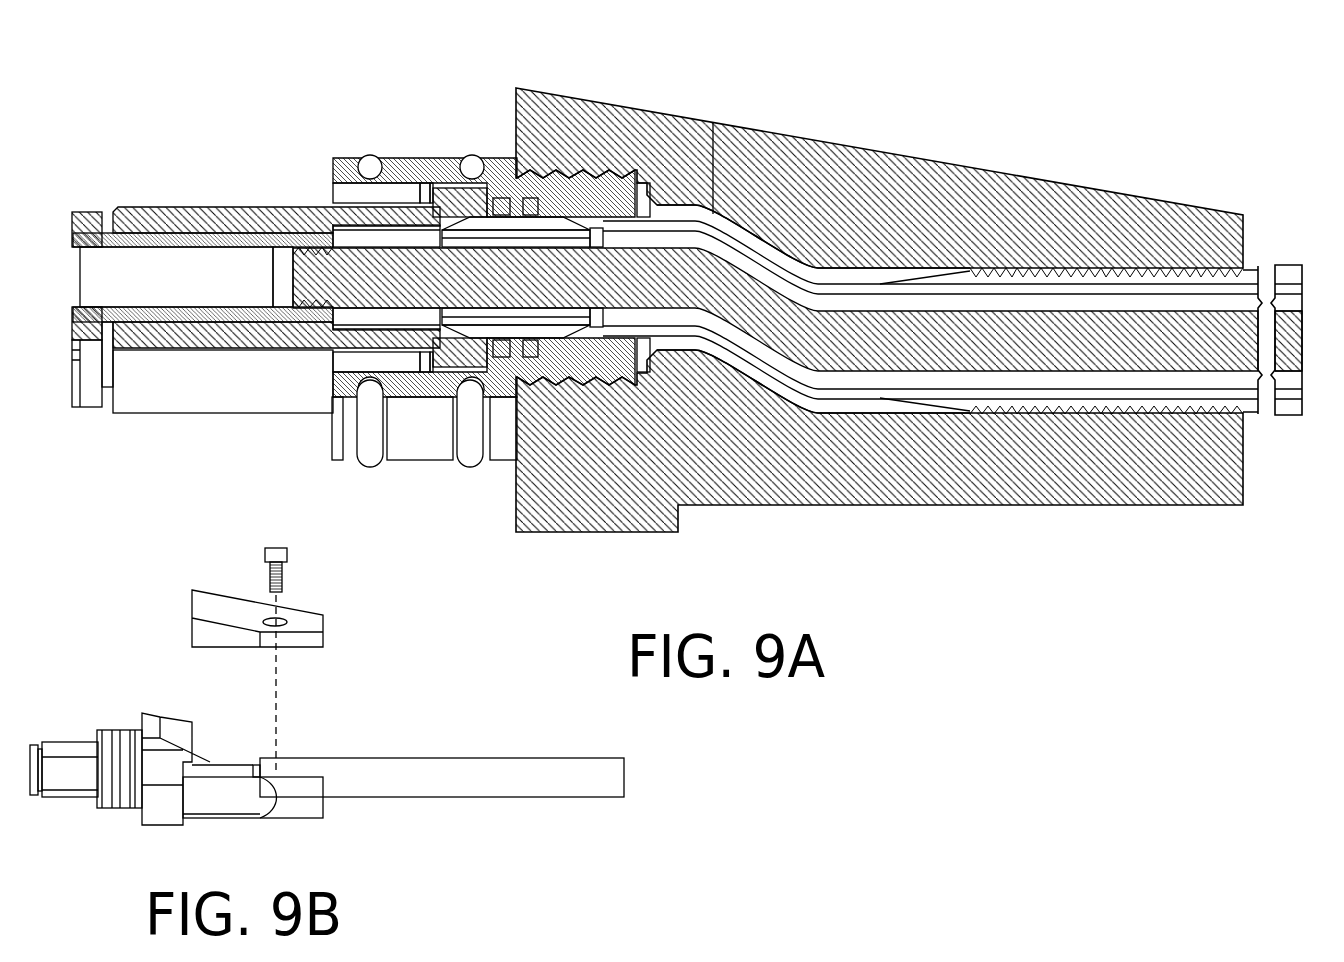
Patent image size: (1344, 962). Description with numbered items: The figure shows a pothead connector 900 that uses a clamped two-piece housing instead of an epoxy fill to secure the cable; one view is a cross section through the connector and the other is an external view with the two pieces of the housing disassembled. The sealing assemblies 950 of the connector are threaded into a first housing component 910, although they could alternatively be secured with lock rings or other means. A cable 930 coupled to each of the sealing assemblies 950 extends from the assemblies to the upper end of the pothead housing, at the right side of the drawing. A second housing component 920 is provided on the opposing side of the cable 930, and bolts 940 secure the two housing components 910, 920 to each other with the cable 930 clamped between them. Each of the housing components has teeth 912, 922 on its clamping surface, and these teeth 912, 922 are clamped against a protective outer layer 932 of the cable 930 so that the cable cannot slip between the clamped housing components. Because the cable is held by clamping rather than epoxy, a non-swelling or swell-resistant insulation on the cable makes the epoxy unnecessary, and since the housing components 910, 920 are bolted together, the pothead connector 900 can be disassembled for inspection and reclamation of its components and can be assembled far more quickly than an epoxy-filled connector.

In FIG. 9A, the pothead connector 900 is at (736, 90).
In FIG. 9A, the first housing component 910 is at (920, 505).
In FIG. 9B, the first housing component 910 is at (307, 817).
In FIG. 9A, the teeth 912 is at (1100, 413).
In FIG. 9A, the second housing component 920 is at (950, 164).
In FIG. 9B, the second housing component 920 is at (323, 632).
In FIG. 9A, the teeth 922 is at (1033, 277).
In FIG. 9A, the cable 930 is at (1306, 188).
In FIG. 9B, the cable 930 is at (377, 758).
In FIG. 9A, the protective outer layer 932 is at (1246, 270).
In FIG. 9B, the bolts 940 is at (265, 557).
In FIG. 9A, the sealing assemblies 950 is at (433, 158).
In FIG. 9B, the sealing assemblies 950 is at (107, 730).